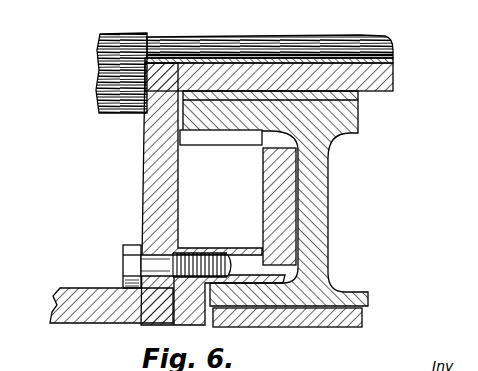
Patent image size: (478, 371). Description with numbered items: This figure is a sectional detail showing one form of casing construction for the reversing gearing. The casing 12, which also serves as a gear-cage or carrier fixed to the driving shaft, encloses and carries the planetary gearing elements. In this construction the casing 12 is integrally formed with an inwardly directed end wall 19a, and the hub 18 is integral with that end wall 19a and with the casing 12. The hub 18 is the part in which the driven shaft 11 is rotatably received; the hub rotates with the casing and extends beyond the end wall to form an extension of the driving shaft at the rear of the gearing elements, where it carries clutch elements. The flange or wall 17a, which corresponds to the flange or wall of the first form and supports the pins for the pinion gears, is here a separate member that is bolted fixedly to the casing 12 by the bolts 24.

The driven shaft 11 is at (372, 44).
The hub 18 is at (238, 72).
The inwardly directed end wall 19a is at (143, 183).
The flange or wall 17a is at (263, 205).
The bolts 24 is at (123, 262).
The casing 12 is at (70, 322).